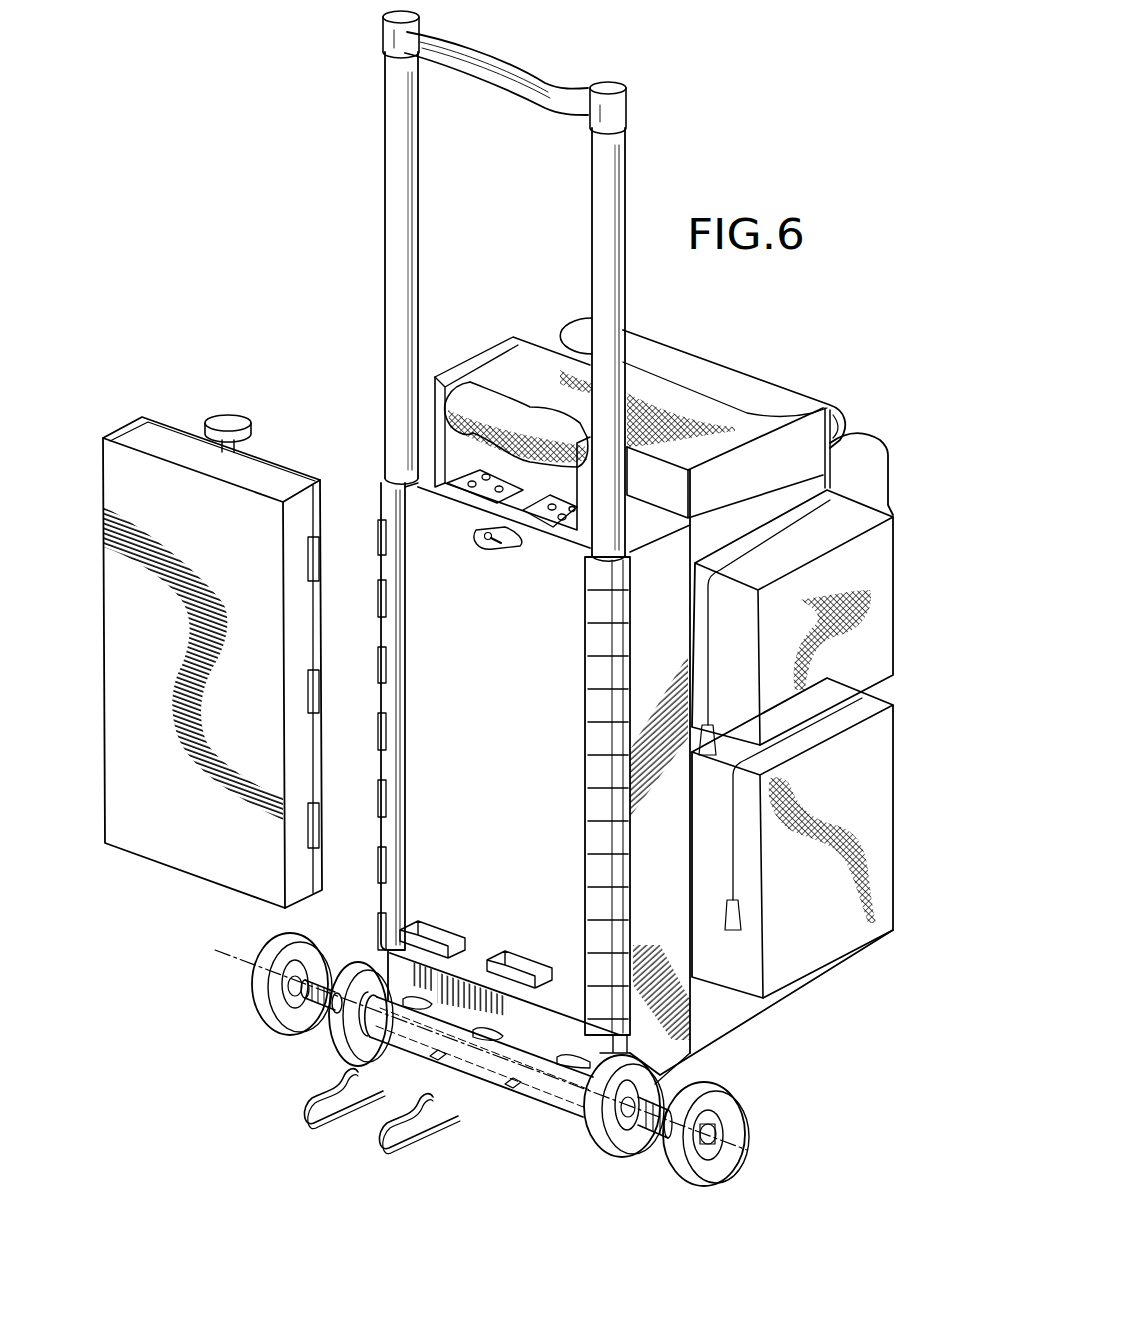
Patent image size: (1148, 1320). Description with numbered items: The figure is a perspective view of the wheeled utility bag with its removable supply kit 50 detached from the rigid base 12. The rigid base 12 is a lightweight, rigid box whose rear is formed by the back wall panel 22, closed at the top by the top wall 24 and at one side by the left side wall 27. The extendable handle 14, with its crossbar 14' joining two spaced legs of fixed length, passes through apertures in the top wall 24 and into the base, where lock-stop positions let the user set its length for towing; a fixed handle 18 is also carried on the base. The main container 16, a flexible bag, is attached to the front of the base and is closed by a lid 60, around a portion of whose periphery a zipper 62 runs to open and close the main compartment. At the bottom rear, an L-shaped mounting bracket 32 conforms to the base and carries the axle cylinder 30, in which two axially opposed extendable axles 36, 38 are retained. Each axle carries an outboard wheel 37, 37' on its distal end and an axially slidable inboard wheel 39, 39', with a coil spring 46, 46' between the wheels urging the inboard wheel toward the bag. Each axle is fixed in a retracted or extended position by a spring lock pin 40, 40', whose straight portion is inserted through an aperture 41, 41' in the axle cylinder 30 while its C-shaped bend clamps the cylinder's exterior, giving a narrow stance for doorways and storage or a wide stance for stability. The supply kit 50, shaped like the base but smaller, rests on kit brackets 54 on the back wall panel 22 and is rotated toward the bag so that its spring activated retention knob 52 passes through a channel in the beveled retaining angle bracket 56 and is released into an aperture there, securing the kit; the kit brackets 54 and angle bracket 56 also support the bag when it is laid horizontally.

The rigid base 12 is at (683, 1007).
The extendable handle 14 is at (465, 286).
The crossbar 14' is at (496, 66).
The main container 16 is at (782, 502).
The fixed handle 18 is at (523, 432).
The back wall panel 22 is at (432, 545).
The top wall 24 is at (438, 453).
The left side wall 27 is at (667, 1058).
The axle cylinder 30 is at (590, 1117).
The mounting bracket 32 is at (452, 1010).
The extendable axle 36 is at (722, 1133).
The outboard wheel 37 is at (265, 995).
The outboard wheel 37' is at (706, 1160).
The extendable axle 38 is at (318, 996).
The inboard wheel 39 is at (329, 1033).
The inboard wheel 39' is at (614, 1129).
The spring lock pin 40 is at (327, 1124).
The spring lock pin 40' is at (400, 1148).
The aperture 41 is at (442, 1053).
The aperture 41' is at (520, 1081).
The coil spring 46 is at (342, 955).
The coil spring 46' is at (645, 1156).
The removable supply kit 50 is at (118, 497).
The spring activated retention knob 52 is at (230, 413).
The kit brackets 54 is at (405, 935).
The retaining angle bracket 56 is at (508, 553).
The lid 60 is at (870, 455).
The zipper 62 is at (830, 460).